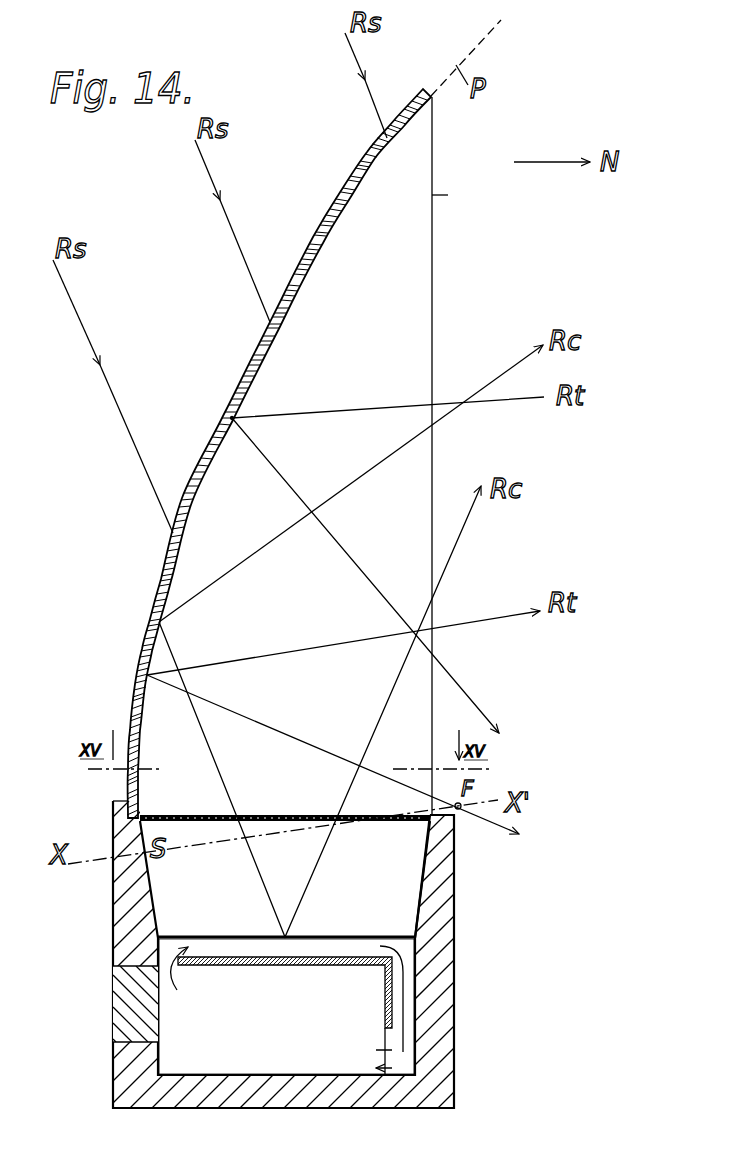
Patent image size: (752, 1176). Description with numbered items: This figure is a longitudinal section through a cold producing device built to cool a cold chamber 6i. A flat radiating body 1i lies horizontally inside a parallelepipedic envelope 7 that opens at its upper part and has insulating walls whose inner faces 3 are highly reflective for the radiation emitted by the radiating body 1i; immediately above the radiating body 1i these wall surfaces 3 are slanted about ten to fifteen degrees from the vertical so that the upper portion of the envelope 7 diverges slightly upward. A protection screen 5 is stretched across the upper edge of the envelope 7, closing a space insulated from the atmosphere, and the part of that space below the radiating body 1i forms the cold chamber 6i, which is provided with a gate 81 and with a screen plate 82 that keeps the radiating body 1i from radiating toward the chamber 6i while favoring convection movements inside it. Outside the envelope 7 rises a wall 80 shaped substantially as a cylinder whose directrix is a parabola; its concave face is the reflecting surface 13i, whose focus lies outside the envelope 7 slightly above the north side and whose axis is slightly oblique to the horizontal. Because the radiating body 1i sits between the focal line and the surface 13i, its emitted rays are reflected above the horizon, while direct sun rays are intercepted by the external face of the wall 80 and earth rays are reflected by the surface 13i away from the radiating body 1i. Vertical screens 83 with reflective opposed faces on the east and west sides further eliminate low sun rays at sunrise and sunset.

The reflecting surface 13i is at (263, 353).
The wall 80 is at (215, 437).
The vertical screen 83 is at (421, 326).
The protection screen 5 is at (262, 815).
The radiating body 1i is at (215, 938).
The screen plate 82 is at (284, 955).
The cold chamber 6i is at (286, 1007).
The gate 81 is at (127, 988).
The inner faces of insulating walls 3 is at (452, 872).
The envelope 7 is at (444, 940).